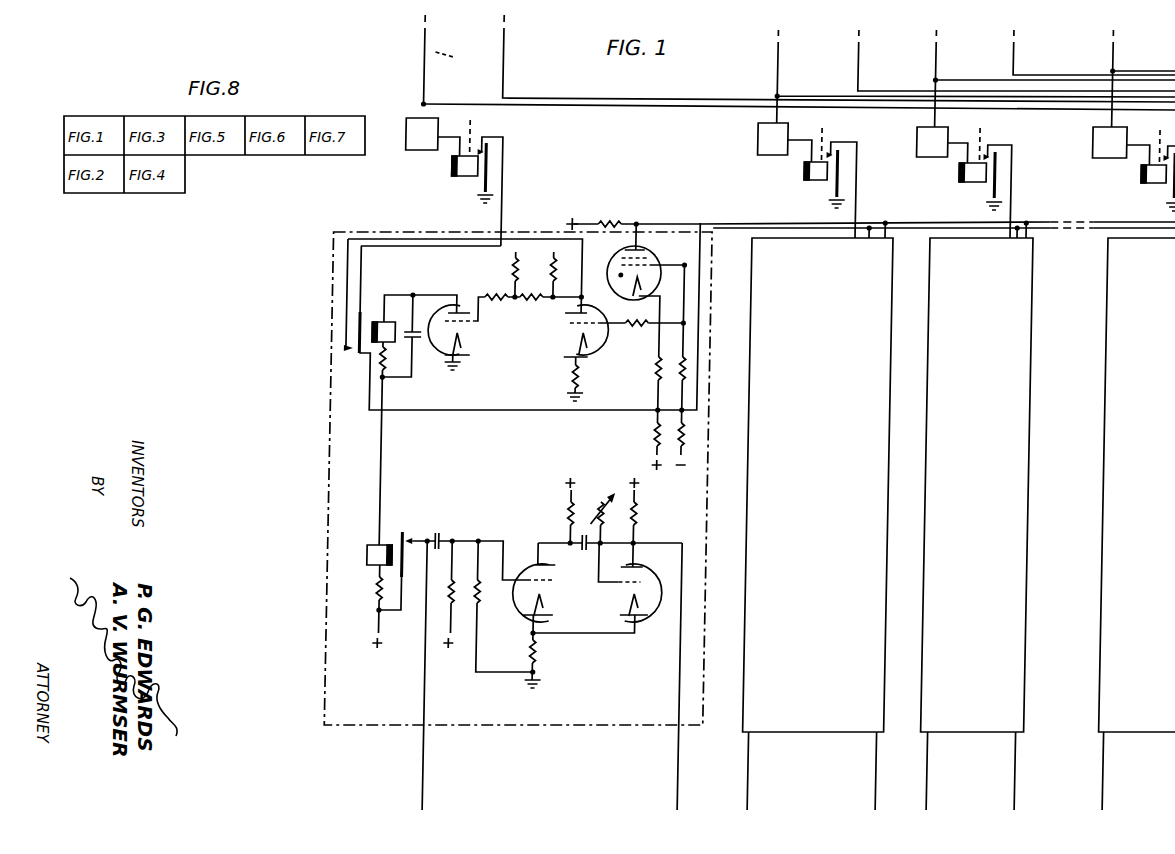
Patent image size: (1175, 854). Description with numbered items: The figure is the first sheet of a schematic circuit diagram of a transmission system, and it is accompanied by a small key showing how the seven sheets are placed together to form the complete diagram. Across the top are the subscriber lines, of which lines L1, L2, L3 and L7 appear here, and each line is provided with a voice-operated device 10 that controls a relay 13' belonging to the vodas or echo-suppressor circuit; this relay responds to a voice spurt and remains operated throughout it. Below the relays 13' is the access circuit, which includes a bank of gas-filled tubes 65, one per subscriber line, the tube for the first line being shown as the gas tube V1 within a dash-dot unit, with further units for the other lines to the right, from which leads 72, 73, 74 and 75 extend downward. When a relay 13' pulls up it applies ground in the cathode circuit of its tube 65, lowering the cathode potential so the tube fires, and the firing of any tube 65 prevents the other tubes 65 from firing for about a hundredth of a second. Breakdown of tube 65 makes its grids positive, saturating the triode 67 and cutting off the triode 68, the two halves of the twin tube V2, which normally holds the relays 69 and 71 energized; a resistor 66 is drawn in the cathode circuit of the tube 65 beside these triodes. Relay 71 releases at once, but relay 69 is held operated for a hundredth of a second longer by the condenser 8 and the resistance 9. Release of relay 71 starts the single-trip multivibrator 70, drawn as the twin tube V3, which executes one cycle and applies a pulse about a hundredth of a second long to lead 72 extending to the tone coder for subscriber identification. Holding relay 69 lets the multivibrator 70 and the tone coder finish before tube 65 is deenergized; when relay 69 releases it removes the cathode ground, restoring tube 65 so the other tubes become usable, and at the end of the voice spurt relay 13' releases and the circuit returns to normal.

The subscriber line L1 is at (799, 59).
The subscriber line L2 is at (976, 76).
The subscriber line L3 is at (1055, 78).
The subscriber line L7 is at (1143, 78).
The voice-operated device 10 is at (424, 150).
The relay 13' is at (467, 164).
The condenser 8 is at (415, 331).
The resistance 9 is at (391, 358).
The gas-filled tube 65 is at (621, 262).
The resistor 66 is at (657, 370).
The triode 67 is at (608, 337).
The triode 68 is at (436, 352).
The relay 69 is at (379, 322).
The single-trip multivibrator 70 is at (664, 606).
The relay 71 is at (373, 545).
The lead 72 is at (688, 767).
The selector unit 73 is at (886, 767).
The selector unit 74 is at (1025, 767).
The selector unit 75 is at (1174, 767).
The gas tube V1 is at (635, 290).
The twin triode V2 is at (556, 326).
The twin triode V3 is at (597, 583).